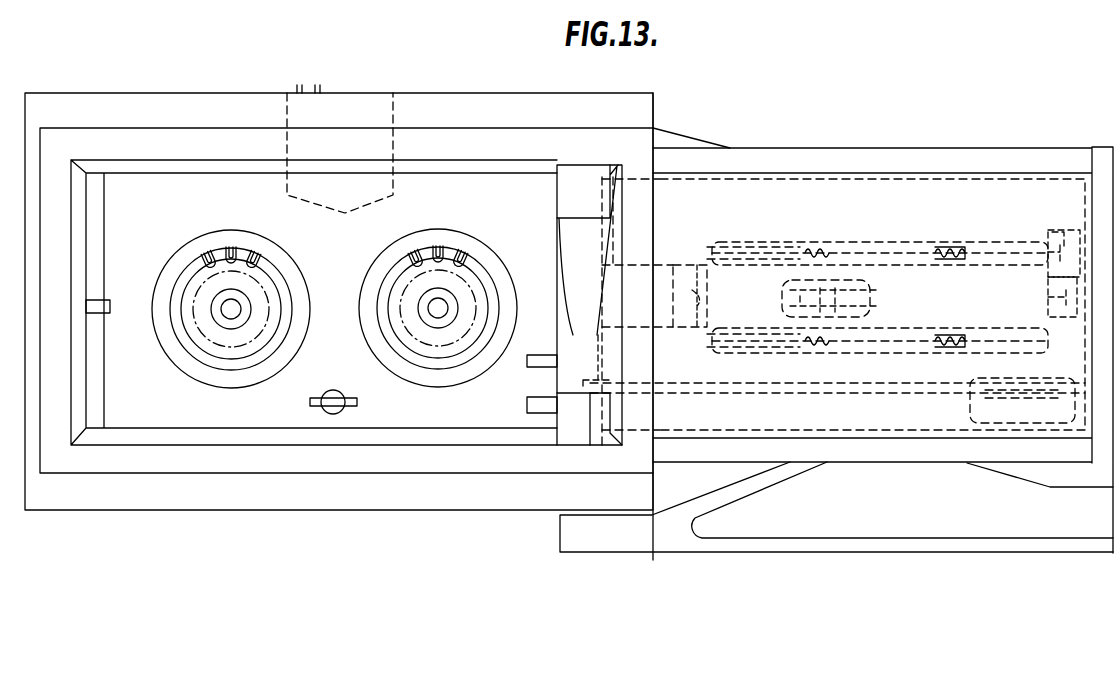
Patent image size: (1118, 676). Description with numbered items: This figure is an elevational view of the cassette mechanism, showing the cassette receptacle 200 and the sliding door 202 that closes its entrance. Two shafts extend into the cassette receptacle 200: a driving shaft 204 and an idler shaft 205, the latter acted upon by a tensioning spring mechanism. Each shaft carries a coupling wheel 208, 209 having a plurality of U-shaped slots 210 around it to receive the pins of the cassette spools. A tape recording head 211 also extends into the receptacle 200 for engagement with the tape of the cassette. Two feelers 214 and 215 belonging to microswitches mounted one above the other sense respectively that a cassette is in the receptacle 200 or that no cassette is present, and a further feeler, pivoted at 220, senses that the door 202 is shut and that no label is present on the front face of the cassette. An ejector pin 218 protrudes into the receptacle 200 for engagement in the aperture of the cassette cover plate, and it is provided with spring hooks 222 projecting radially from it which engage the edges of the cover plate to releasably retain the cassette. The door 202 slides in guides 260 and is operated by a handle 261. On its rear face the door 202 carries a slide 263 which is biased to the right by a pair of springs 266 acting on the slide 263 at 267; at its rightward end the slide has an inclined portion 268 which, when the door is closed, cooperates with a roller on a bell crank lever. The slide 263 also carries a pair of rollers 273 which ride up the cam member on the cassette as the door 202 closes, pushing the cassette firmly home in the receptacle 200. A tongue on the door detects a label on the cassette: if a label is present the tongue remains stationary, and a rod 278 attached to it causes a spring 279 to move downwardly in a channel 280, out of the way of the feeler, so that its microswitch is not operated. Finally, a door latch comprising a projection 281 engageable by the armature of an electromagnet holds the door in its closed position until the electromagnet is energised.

The cassette receptacle 200 is at (222, 422).
The sliding door 202 is at (865, 415).
The driving shaft 204 is at (442, 306).
The idler shaft 205 is at (230, 300).
The coupling wheel 208 is at (439, 238).
The coupling wheel 209 is at (253, 288).
The U-shaped slots 210 is at (183, 274).
The tape recording head 211 is at (352, 187).
The feeler 214 is at (545, 413).
The feeler 215 is at (527, 362).
The ejector pin 218 is at (331, 391).
The feeler pivot 220 is at (106, 312).
The spring hooks 222 is at (357, 403).
The guides 260 is at (445, 170).
The handle 261 is at (572, 226).
The slide 263 is at (1030, 292).
The springs 266 is at (885, 250).
The spring engagement point 267 is at (700, 266).
The inclined portion 268 is at (1050, 300).
The rollers 273 is at (870, 300).
The rod 278 is at (786, 380).
The spring 279 is at (603, 446).
The channel 280 is at (605, 342).
The projection 281 is at (1050, 240).